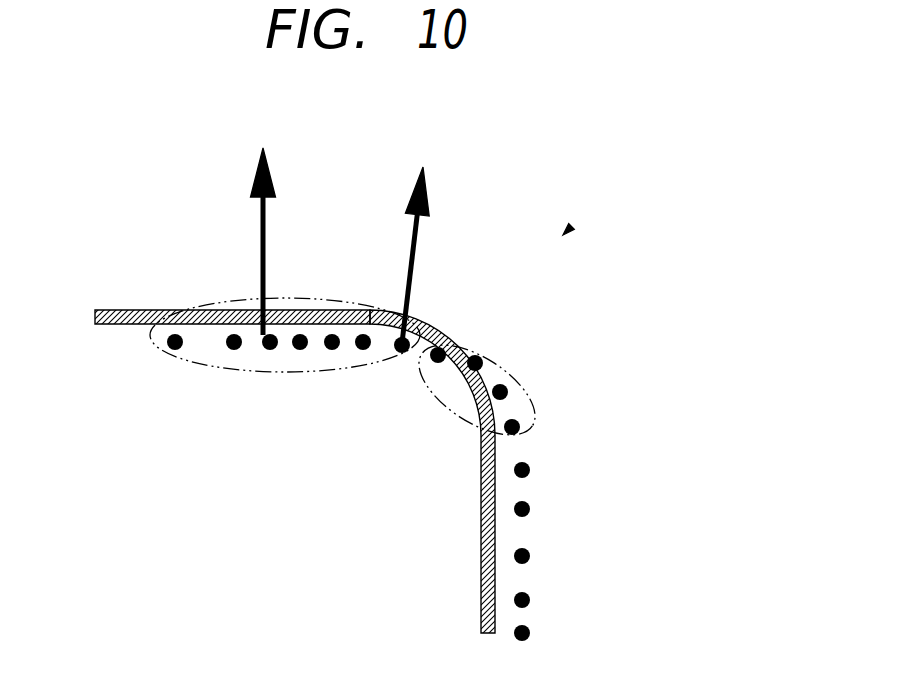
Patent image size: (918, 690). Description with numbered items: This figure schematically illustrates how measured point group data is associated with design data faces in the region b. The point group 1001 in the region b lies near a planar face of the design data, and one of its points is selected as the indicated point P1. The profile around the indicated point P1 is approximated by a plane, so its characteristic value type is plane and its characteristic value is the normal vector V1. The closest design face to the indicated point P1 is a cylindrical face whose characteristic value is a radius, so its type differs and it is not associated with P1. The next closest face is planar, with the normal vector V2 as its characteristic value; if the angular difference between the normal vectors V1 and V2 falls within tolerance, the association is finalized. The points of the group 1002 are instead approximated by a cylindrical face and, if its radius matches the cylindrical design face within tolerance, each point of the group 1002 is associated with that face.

The point group 1001 is at (212, 366).
The point group 1002 is at (523, 381).
The normal vector V1 is at (413, 193).
The normal vector V2 is at (253, 180).
The indicated point P1 is at (402, 346).
The region b is at (572, 226).